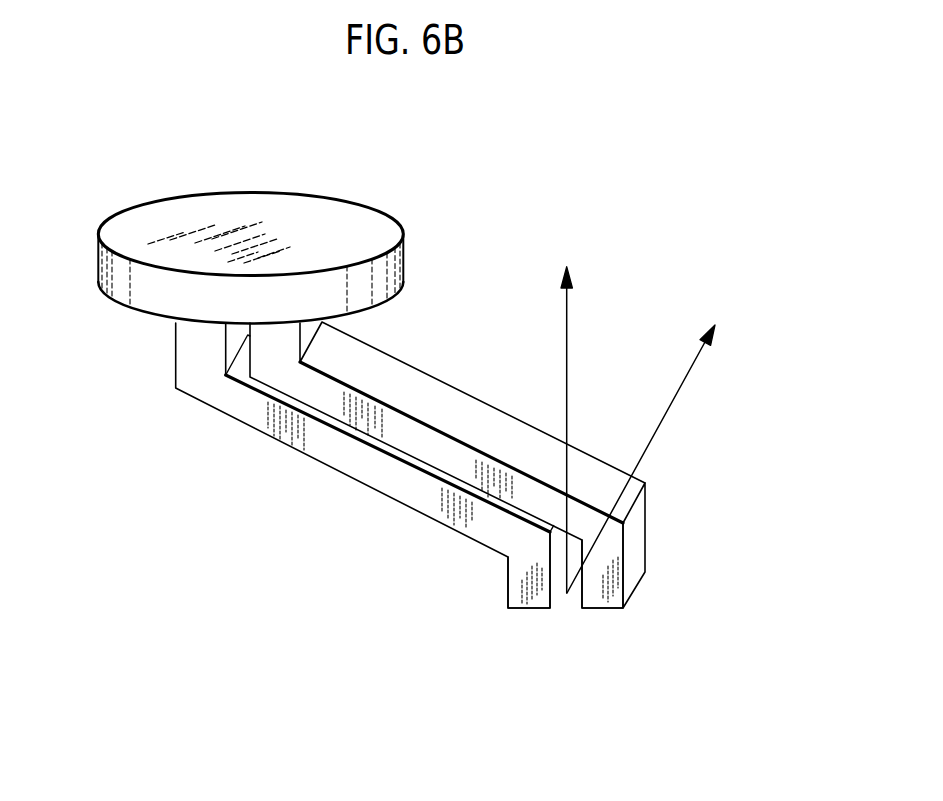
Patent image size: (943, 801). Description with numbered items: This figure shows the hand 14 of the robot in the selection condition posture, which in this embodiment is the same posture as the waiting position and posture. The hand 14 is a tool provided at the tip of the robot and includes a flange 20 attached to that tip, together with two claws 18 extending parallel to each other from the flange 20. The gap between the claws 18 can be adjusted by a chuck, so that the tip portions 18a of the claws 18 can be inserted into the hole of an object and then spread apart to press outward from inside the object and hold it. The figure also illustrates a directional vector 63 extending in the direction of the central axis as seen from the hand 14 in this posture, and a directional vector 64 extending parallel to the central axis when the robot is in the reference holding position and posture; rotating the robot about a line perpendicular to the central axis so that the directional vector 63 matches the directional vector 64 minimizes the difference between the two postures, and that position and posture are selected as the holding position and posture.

The flange 20 is at (305, 217).
The hand 14 is at (455, 310).
The claws 18 is at (499, 405).
The tip portions 18a is at (610, 600).
The directional vector 63 is at (567, 323).
The directional vector 64 is at (680, 388).